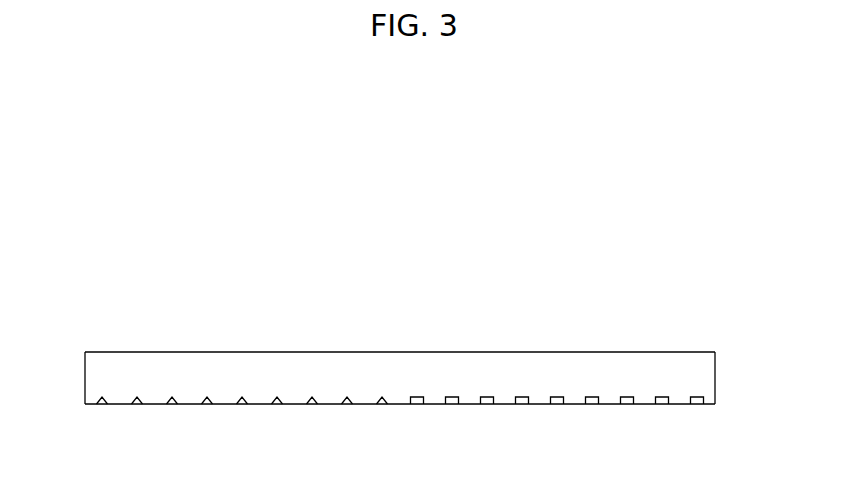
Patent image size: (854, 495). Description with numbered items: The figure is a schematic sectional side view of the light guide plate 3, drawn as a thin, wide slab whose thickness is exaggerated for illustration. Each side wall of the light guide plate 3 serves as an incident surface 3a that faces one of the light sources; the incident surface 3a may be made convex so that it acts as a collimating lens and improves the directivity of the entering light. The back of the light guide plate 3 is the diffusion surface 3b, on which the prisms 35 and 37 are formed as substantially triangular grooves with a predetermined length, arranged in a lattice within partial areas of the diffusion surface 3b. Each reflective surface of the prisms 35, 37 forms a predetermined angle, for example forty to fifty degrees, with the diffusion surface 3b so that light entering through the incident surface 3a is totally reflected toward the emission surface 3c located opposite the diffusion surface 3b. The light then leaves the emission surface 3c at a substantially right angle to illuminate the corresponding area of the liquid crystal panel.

The light guide plate 3 is at (411, 381).
The incident surface 3a is at (85, 378).
The diffusion surface 3b is at (677, 405).
The emission surface 3c is at (428, 352).
The prism 35 is at (172, 405).
The prism 37 is at (557, 405).